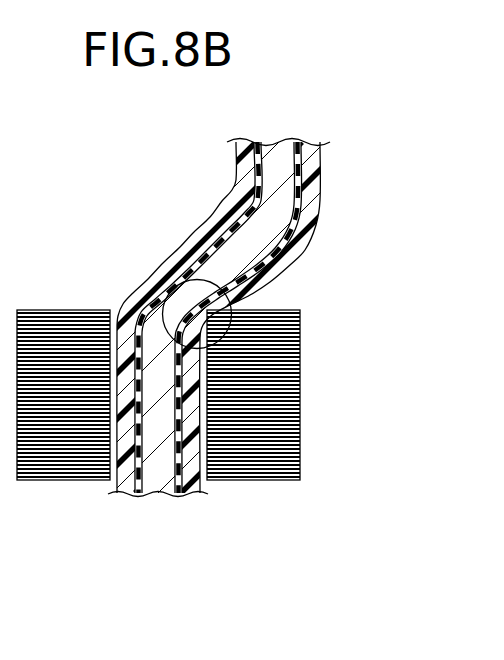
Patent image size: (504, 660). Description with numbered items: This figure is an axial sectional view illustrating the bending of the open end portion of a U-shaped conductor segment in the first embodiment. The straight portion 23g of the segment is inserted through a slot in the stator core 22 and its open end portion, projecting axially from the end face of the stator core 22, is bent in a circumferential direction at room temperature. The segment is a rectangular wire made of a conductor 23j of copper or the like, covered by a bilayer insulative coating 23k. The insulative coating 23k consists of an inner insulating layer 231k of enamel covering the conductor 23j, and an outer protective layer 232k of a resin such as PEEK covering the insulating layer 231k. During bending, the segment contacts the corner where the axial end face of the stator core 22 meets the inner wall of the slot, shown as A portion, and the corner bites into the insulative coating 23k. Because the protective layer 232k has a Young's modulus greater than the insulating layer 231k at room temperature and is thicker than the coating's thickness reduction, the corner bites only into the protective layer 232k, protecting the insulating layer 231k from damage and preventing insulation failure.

The stator core 22 is at (62, 327).
The straight portion 23g is at (252, 373).
The conductor 23j is at (158, 482).
The insulative coating 23k is at (252, 377).
The insulating layer 231k is at (268, 556).
The protective layer 232k is at (190, 496).
The A portion A is at (172, 274).